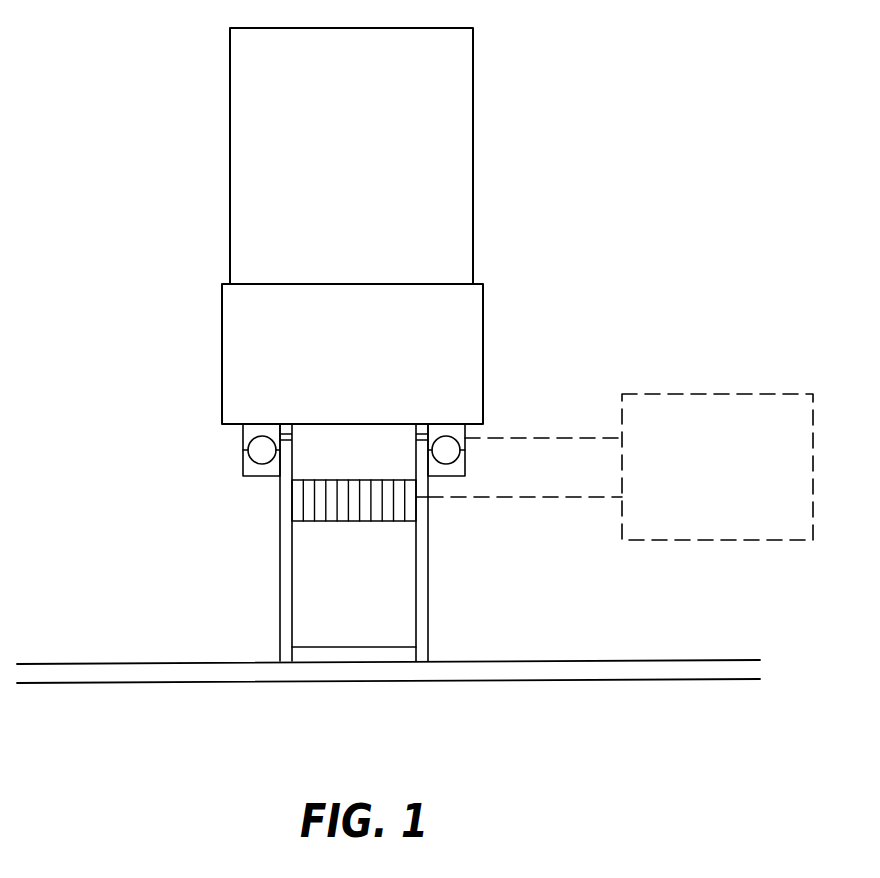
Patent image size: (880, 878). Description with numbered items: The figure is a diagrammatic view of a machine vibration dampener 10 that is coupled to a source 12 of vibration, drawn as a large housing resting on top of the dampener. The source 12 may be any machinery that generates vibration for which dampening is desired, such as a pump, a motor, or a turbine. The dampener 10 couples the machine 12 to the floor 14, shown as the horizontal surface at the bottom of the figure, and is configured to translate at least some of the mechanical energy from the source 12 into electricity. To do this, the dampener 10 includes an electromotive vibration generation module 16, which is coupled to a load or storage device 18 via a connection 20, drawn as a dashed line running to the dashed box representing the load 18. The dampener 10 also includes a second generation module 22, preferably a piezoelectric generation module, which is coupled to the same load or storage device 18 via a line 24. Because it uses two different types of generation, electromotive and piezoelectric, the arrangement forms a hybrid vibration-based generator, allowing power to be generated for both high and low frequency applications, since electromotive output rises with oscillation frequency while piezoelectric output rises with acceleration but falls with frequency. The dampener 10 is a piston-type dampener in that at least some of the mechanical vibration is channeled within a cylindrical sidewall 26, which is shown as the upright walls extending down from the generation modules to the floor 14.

The dampener 10 is at (217, 399).
The source of vibration 12 is at (473, 142).
The floor 14 is at (592, 660).
The electromotive vibration generation module 16 is at (243, 460).
The load or storage device 18 is at (717, 394).
The connection 20 is at (558, 438).
The second generation module 22 is at (352, 521).
The line 24 is at (522, 498).
The cylindrical sidewall 26 is at (428, 579).